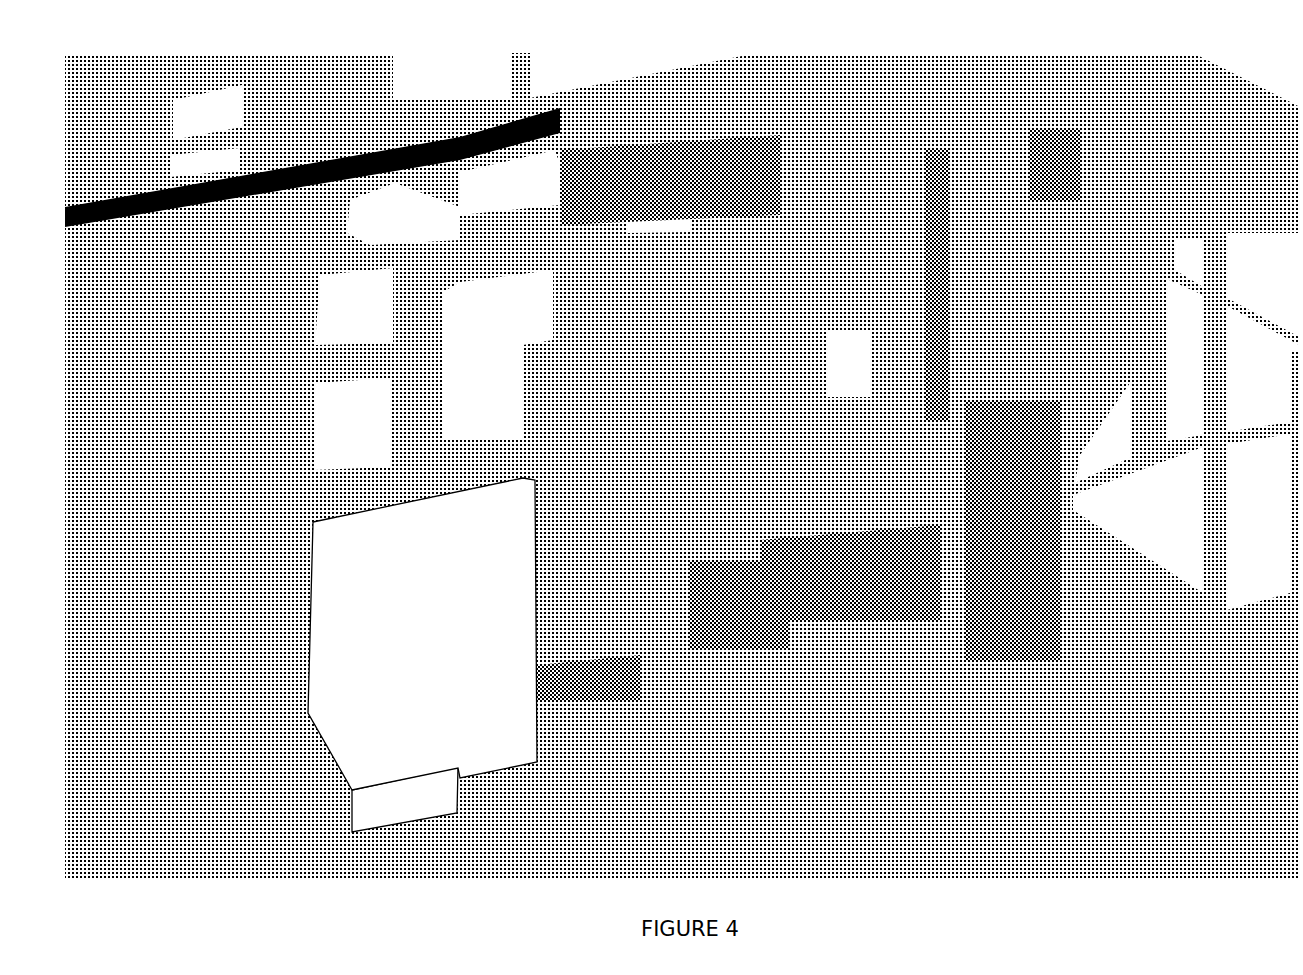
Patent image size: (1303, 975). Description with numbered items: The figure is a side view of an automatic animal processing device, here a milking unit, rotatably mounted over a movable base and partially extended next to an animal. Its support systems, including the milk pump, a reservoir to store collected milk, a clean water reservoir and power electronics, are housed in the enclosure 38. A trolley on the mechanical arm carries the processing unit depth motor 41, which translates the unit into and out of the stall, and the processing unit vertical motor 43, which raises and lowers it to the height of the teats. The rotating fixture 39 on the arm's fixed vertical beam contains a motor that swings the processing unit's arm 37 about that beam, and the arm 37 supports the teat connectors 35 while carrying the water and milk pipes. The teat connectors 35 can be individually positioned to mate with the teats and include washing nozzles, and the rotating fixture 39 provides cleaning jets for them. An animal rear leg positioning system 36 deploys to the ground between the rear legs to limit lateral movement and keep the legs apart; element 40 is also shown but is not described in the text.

The teat connectors 35 is at (757, 625).
The animal rear leg positioning system 36 is at (586, 690).
The processing unit's arm 37 is at (821, 597).
The enclosure 38 is at (422, 634).
The rotating fixture 39 is at (993, 612).
The mounting bracket 40 is at (1050, 148).
The processing unit depth motor 41 is at (722, 195).
The processing unit vertical motor 43 is at (937, 175).